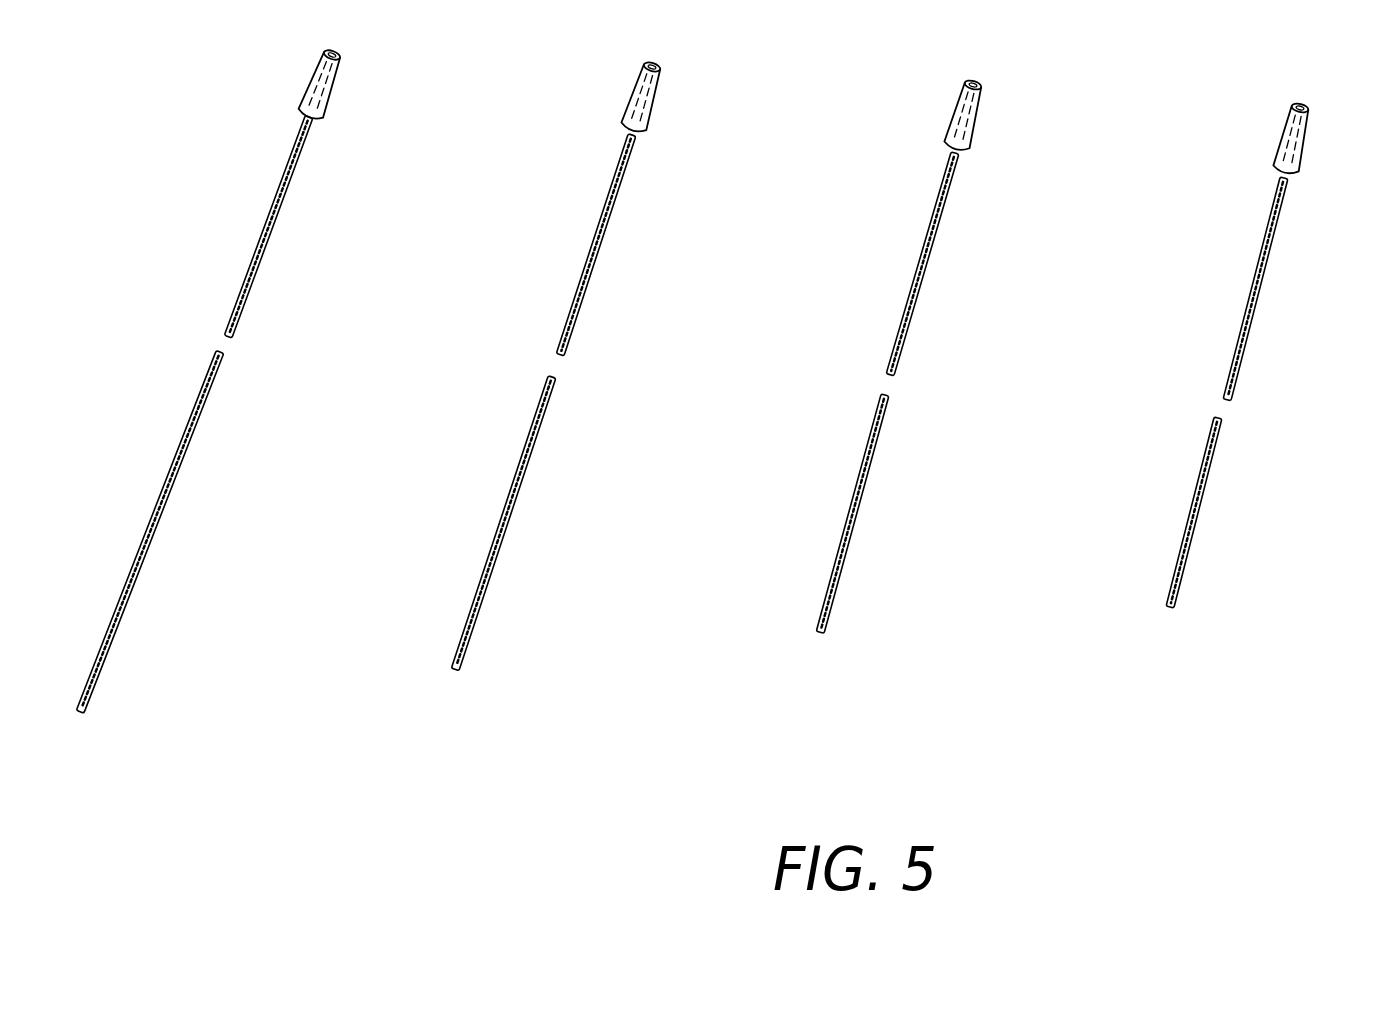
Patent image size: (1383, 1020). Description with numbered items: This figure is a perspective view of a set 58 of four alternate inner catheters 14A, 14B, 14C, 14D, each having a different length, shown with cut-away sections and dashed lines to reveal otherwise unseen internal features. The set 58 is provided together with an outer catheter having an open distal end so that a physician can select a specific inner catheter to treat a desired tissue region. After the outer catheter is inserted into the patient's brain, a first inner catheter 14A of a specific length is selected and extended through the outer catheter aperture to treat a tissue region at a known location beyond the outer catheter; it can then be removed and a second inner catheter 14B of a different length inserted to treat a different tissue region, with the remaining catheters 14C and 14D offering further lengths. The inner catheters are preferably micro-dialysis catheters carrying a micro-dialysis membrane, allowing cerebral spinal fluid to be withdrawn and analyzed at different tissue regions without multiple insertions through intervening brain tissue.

The set of inner catheters 58 is at (120, 126).
The first inner catheter 14A is at (210, 380).
The second inner catheter 14B is at (570, 364).
The third inner catheter 14C is at (920, 356).
The fourth inner catheter 14D is at (1273, 354).